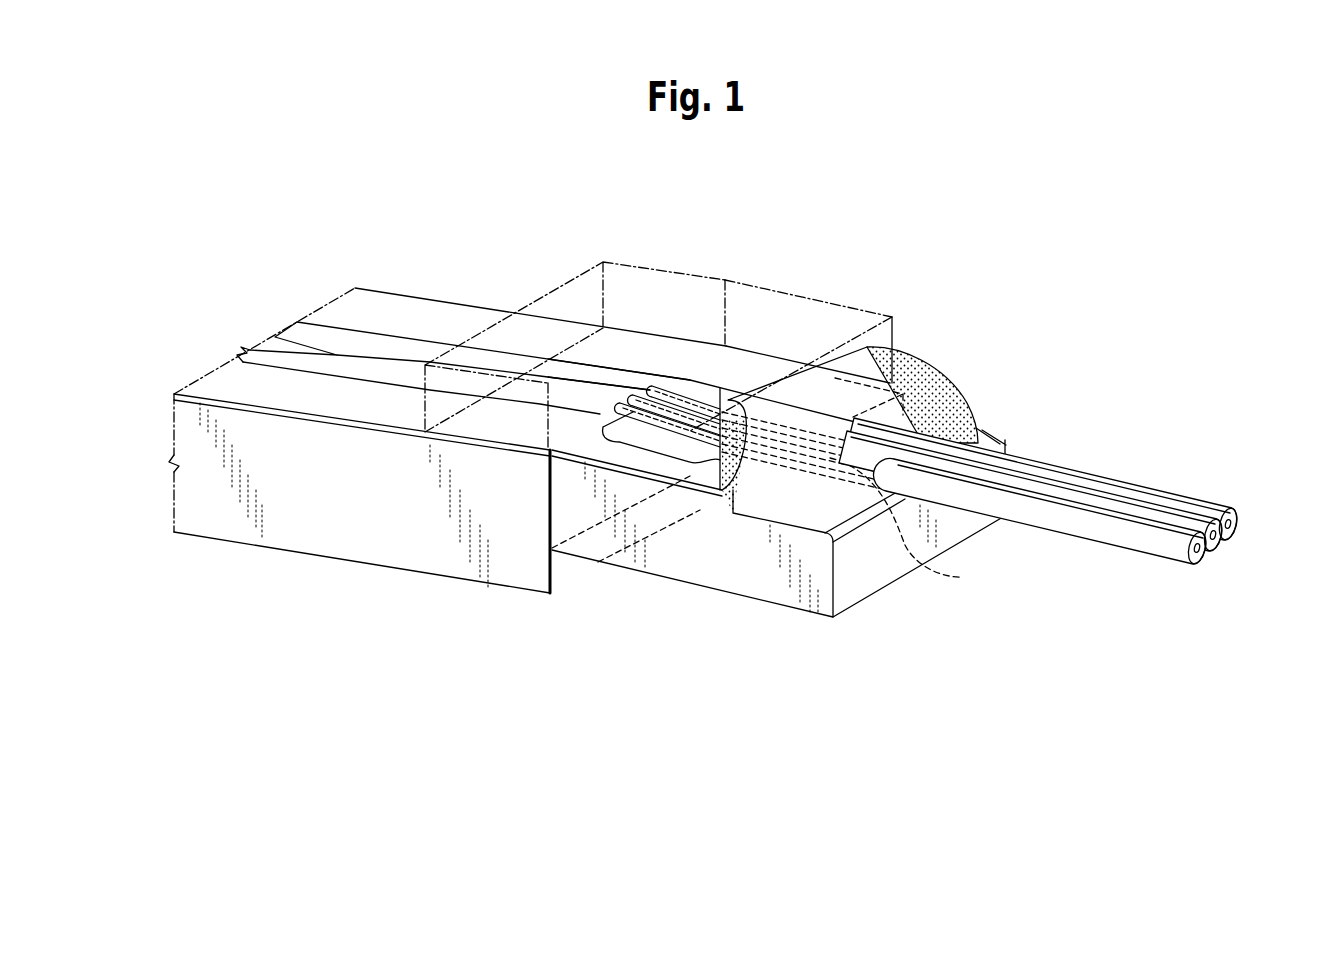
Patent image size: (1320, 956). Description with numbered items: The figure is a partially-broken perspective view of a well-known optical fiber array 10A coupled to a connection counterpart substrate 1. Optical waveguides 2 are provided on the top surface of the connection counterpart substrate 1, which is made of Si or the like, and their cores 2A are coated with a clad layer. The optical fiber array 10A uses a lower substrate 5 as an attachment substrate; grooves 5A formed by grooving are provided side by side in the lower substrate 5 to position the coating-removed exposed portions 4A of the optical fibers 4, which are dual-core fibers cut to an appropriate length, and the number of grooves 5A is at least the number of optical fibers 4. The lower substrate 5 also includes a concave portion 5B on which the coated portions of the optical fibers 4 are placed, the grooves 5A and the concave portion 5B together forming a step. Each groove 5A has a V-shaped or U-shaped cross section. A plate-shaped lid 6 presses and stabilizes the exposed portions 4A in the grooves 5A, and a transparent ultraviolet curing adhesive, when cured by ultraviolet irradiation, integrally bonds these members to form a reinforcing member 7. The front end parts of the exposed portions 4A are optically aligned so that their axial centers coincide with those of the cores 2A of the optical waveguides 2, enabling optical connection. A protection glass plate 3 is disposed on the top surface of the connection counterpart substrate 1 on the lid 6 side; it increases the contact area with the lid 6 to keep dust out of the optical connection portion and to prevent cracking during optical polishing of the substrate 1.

The connection counterpart substrate 1 is at (313, 543).
The optical waveguides 2 is at (318, 333).
The cores of optical waveguides 2A is at (583, 377).
The protection glass plate 3 is at (650, 290).
The lid 6 is at (713, 315).
The optical fiber array 10A is at (731, 270).
The lower substrate 5 is at (753, 585).
The grooves 5A is at (912, 526).
The concave portion 5B is at (817, 527).
The exposed portions 4A is at (683, 480).
The reinforcing member 7 is at (960, 410).
The optical fibers 4 is at (1103, 487).